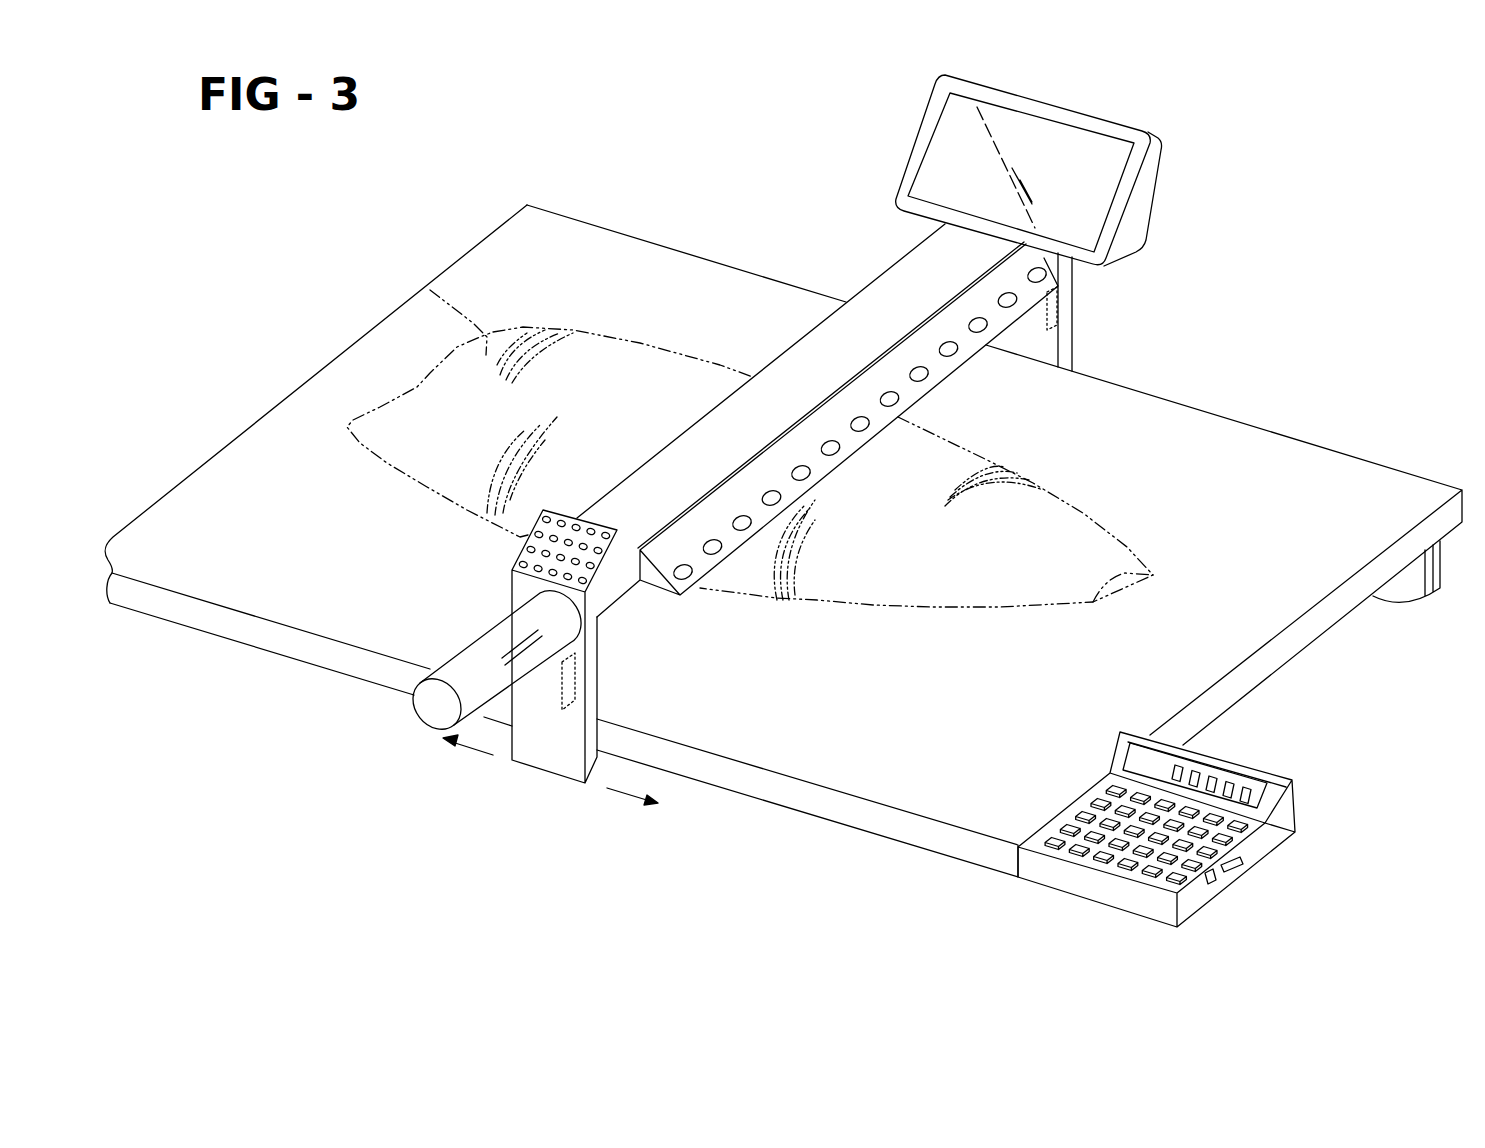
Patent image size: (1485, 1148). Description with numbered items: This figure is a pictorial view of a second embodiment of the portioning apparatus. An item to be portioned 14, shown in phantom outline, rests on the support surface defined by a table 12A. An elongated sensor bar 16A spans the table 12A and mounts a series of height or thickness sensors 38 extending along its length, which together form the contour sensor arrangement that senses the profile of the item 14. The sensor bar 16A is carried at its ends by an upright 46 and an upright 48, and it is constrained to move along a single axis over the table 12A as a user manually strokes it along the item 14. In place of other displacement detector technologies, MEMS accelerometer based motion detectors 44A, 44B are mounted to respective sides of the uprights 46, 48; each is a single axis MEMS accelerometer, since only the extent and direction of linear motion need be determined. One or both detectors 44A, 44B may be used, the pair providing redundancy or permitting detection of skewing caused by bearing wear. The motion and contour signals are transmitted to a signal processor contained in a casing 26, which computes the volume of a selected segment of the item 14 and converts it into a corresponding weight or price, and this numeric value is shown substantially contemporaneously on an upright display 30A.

The table 12A is at (268, 628).
The item to be portioned 14 is at (430, 290).
The sensor bar 16A is at (908, 282).
The casing 26 is at (1090, 882).
The upright display 30A is at (950, 143).
The height or thickness sensors 38 is at (683, 560).
The MEMS accelerometer based motion detector 44A is at (575, 680).
The MEMS accelerometer based motion detector 44B is at (1058, 307).
The upright 46 is at (545, 730).
The upright 48 is at (1073, 340).